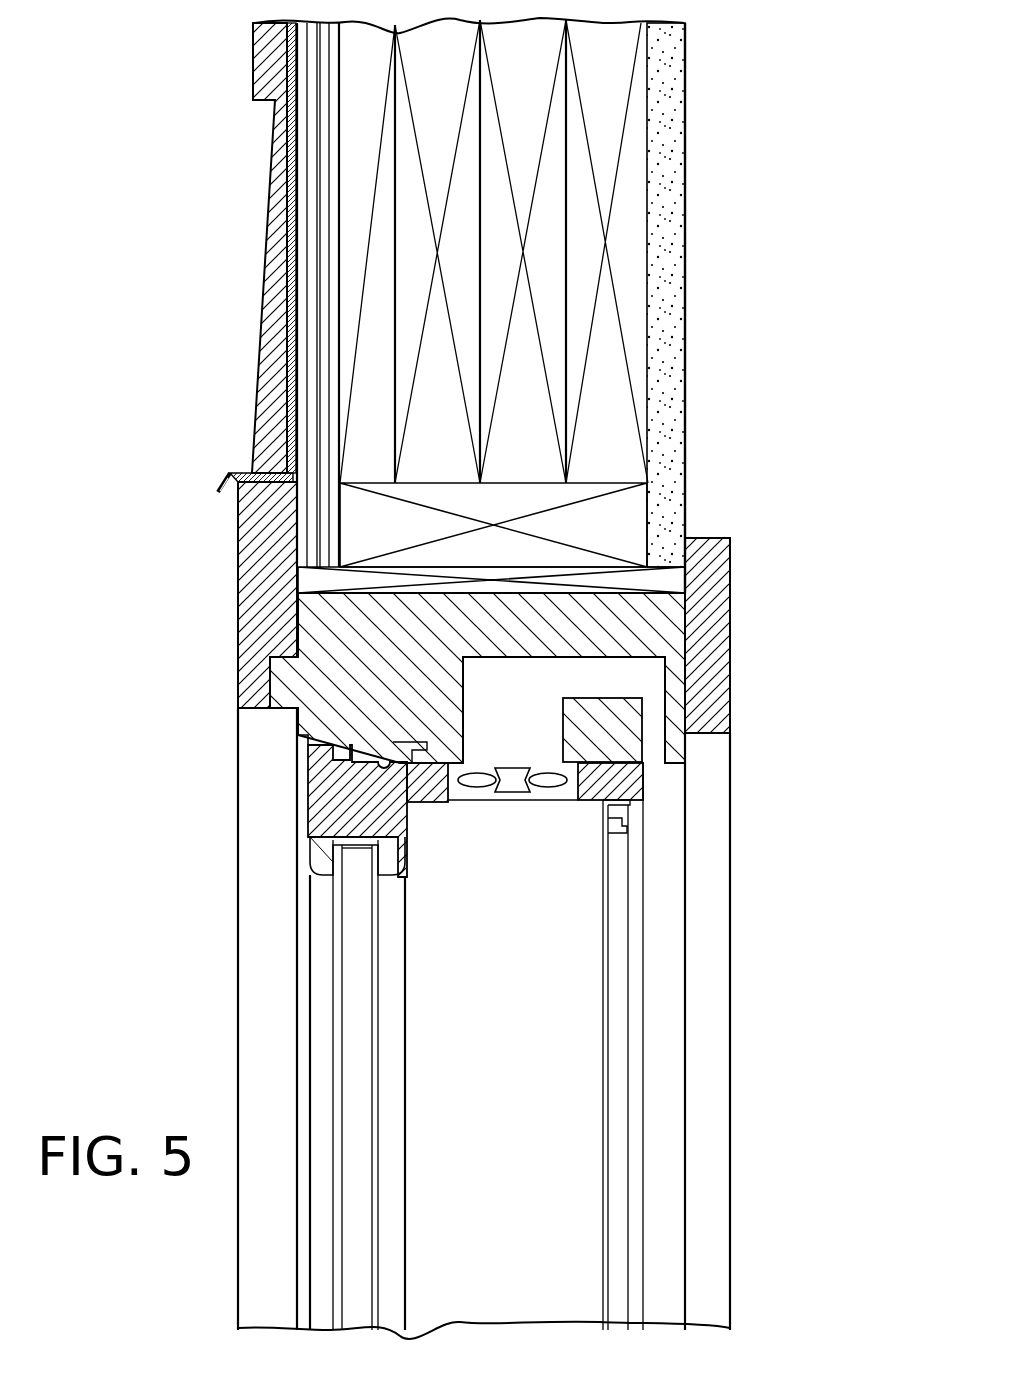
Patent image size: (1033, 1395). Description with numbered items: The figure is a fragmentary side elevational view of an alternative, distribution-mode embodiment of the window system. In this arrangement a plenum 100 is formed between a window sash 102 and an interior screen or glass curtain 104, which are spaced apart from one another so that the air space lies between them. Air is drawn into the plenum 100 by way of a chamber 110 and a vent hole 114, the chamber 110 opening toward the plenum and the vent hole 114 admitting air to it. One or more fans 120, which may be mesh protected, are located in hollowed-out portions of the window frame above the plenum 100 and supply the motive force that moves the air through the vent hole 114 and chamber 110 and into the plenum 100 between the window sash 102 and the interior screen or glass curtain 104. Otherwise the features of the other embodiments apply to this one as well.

The plenum 100 is at (582, 1072).
The window sash 102 is at (340, 1060).
The interior screen or glass curtain 104 is at (610, 1113).
The chamber 110 is at (541, 722).
The vent hole 114 is at (657, 757).
The fan 120 is at (538, 795).